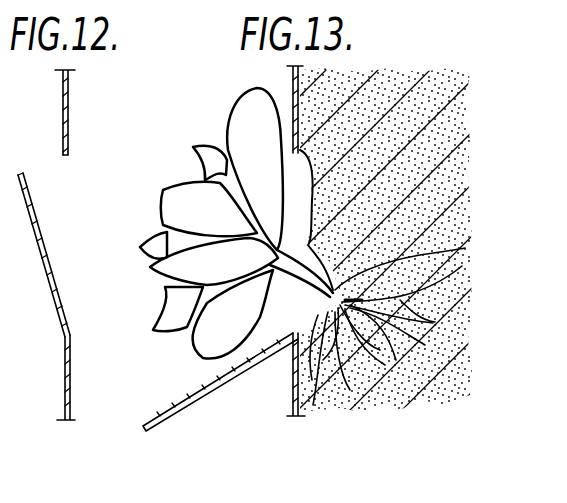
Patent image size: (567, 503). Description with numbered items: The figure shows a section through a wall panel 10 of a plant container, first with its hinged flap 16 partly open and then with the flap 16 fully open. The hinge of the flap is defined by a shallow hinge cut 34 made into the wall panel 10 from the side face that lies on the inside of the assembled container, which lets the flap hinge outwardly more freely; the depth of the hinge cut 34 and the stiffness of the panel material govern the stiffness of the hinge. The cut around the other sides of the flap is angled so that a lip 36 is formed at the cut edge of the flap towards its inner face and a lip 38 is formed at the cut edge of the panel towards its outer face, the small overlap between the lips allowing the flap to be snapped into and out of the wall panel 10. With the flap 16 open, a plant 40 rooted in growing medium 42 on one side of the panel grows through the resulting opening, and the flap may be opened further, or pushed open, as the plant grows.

In FIG. 12, the wall panel 10 is at (62, 88).
In FIG. 13, the wall panel 10 is at (292, 86).
In FIG. 12, the flap 16 is at (43, 247).
In FIG. 13, the flap 16 is at (227, 378).
In FIG. 12, the hinge cut 34 is at (72, 337).
In FIG. 13, the hinge cut 34 is at (287, 352).
In FIG. 12, the lip 36 is at (20, 172).
In FIG. 12, the lip 38 is at (67, 155).
In FIG. 13, the plant 40 is at (240, 133).
In FIG. 13, the growing medium 42 is at (403, 390).